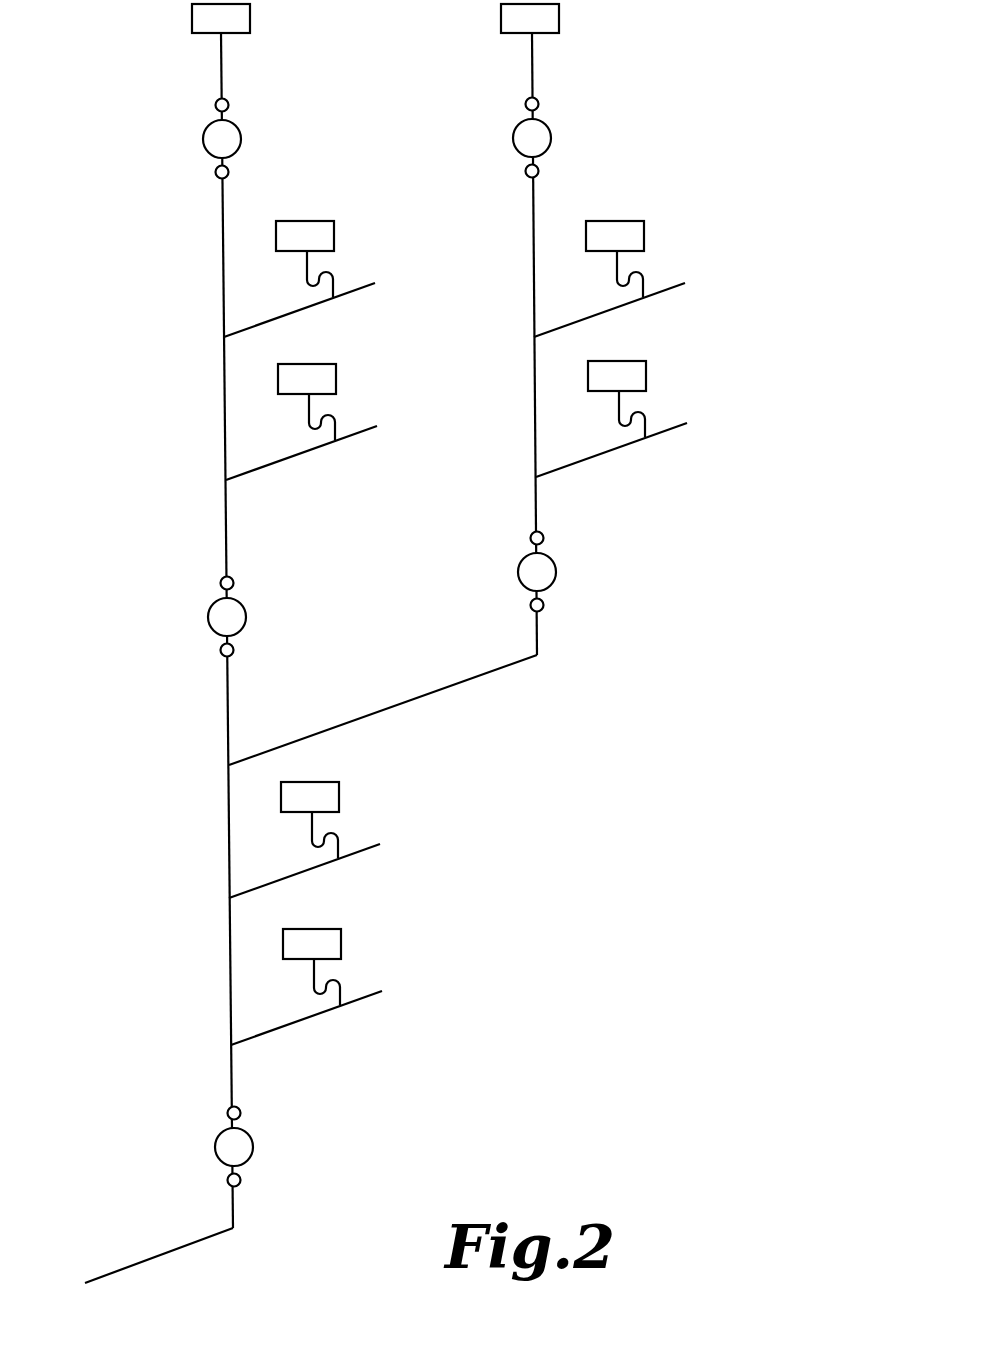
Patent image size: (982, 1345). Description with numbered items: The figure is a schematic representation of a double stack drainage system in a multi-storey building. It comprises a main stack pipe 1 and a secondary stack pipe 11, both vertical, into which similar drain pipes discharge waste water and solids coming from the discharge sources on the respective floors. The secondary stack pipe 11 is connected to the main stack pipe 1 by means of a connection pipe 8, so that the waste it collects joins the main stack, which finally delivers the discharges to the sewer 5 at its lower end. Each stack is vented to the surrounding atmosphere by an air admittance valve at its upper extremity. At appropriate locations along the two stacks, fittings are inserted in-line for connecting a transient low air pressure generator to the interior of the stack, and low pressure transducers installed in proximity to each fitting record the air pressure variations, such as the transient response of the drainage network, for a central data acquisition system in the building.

The vertical stack discharge pipe 1 is at (225, 384).
The sewer 5 is at (112, 1273).
The connection pipe 8 is at (478, 677).
The secondary stack pipe 11 is at (534, 218).